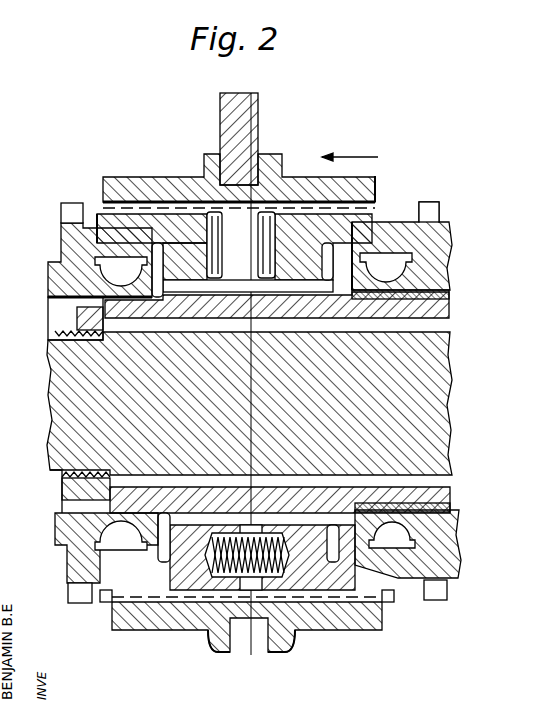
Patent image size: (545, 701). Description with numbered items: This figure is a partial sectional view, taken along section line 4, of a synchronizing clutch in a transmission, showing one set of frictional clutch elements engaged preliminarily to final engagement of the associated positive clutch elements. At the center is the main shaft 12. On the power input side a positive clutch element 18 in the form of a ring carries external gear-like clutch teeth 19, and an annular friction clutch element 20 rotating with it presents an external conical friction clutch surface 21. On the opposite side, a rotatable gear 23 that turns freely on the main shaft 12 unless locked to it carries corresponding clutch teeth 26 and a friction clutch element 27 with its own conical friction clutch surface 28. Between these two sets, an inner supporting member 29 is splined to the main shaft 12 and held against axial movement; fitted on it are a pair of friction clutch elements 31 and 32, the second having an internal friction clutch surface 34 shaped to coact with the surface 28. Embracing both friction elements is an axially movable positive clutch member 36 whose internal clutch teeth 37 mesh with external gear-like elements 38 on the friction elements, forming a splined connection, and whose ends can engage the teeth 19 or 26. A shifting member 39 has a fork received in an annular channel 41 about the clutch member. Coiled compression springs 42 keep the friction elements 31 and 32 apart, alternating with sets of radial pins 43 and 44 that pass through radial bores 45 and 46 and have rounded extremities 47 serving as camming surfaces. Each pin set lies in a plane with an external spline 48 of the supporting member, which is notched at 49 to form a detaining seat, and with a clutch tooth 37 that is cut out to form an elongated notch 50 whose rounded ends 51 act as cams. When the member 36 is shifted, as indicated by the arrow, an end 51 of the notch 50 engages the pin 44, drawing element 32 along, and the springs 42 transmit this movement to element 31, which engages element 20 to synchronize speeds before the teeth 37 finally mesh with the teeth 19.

The section line 4 is at (247, 93).
The main shaft 12 is at (50, 368).
The positive clutch element 18 is at (62, 240).
The clutch teeth 19 is at (72, 212).
The friction clutch element 20 is at (92, 557).
The friction clutch surface 21 is at (97, 222).
The rotatable gear 23 is at (447, 278).
The clutch teeth 26 is at (437, 208).
The friction clutch element 27 is at (409, 563).
The friction clutch surface 28 is at (405, 228).
The supporting member 29 is at (78, 307).
The friction clutch element 31 is at (118, 212).
The friction clutch element 32 is at (376, 214).
The internal friction clutch surface 34 is at (358, 565).
The positive clutch member 36 is at (186, 186).
The internal clutch teeth 37 is at (107, 203).
The gear-like elements 38 is at (106, 597).
The shifting member 39 is at (258, 110).
The annular channel 41 is at (215, 648).
The coiled compression springs 42 is at (205, 585).
The radial pin 43 is at (168, 214).
The radial pin 44 is at (285, 248).
The radial bore 45 is at (185, 218).
The radial bore 46 is at (376, 192).
The rounded extremity 47 is at (206, 284).
The external spline 48 is at (337, 283).
The notch 49 is at (50, 402).
The elongated notch 50 is at (265, 214).
The rounded end 51 is at (212, 213).